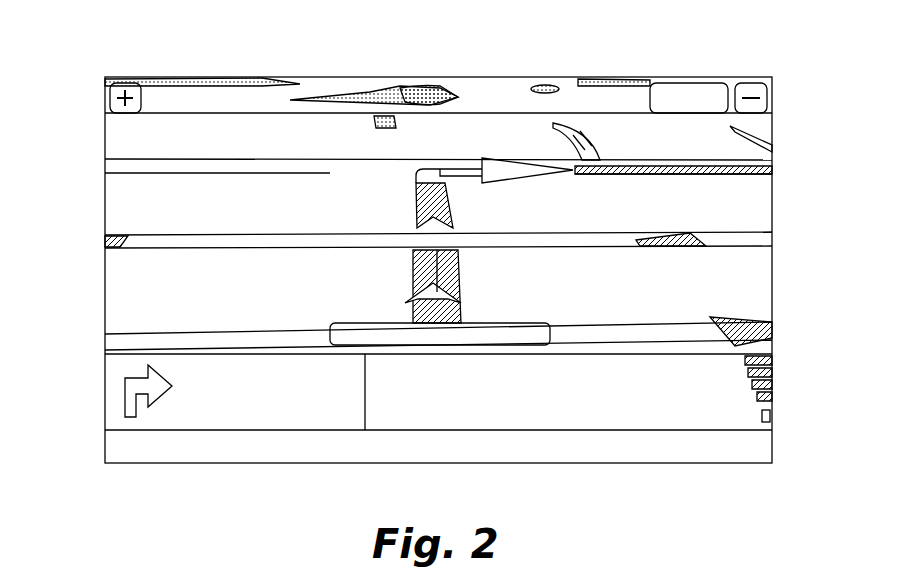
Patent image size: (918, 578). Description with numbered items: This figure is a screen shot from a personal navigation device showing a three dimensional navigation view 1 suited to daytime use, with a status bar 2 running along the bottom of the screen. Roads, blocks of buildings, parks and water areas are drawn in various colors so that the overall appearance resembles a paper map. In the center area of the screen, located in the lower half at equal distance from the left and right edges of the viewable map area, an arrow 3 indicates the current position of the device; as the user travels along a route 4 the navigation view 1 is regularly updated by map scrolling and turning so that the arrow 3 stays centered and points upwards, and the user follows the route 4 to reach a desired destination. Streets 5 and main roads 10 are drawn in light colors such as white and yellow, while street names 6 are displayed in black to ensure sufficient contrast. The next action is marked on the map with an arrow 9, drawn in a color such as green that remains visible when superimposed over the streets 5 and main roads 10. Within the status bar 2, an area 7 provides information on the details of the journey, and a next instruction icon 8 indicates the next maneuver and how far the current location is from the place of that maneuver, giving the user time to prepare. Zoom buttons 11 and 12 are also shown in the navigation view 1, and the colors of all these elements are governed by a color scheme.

The navigation view 1 is at (108, 292).
The status bar 2 is at (108, 393).
The arrow indicating the current position 3 is at (440, 292).
The route 4 is at (614, 168).
The streets 5 is at (348, 160).
The street names 6 is at (445, 92).
The area 7 is at (577, 398).
The next instruction icon 8 is at (200, 402).
The arrow for next action 9 is at (513, 170).
The main roads 10 is at (120, 168).
The zoom button 11 is at (115, 100).
The zoom button 12 is at (755, 110).